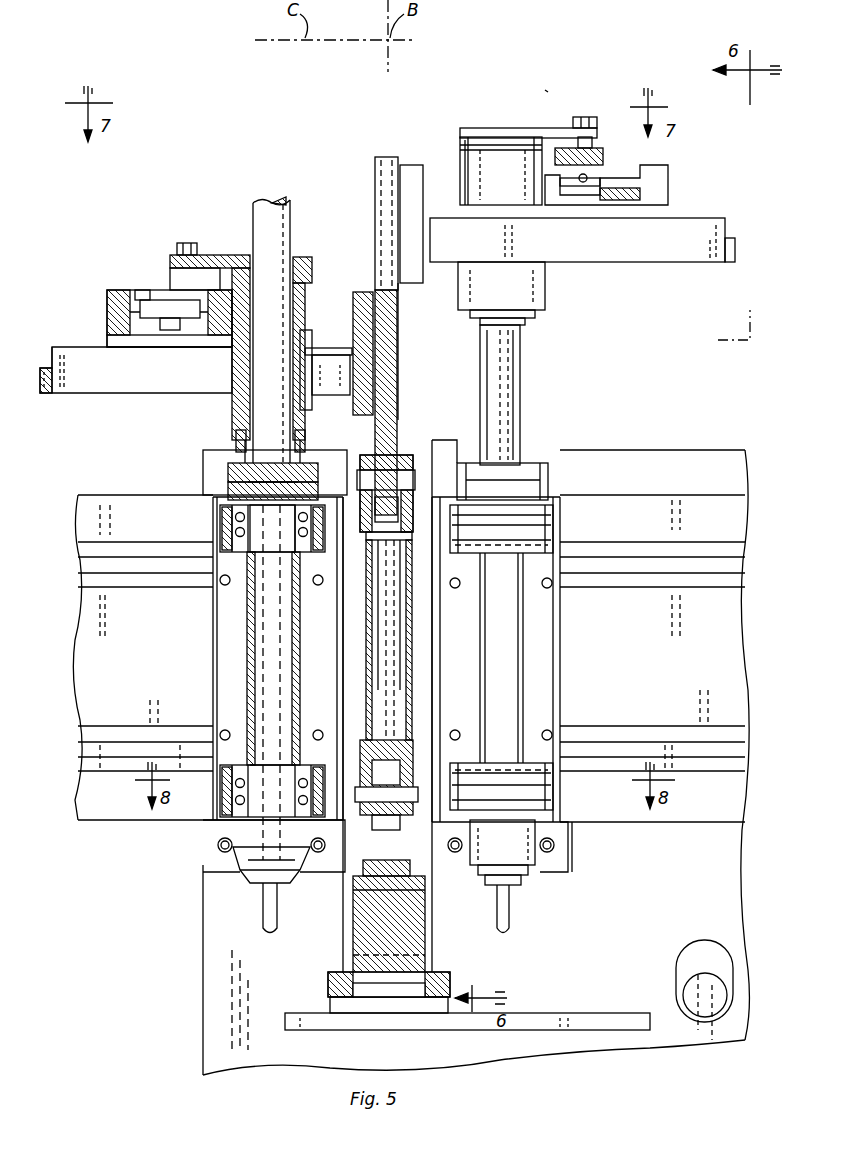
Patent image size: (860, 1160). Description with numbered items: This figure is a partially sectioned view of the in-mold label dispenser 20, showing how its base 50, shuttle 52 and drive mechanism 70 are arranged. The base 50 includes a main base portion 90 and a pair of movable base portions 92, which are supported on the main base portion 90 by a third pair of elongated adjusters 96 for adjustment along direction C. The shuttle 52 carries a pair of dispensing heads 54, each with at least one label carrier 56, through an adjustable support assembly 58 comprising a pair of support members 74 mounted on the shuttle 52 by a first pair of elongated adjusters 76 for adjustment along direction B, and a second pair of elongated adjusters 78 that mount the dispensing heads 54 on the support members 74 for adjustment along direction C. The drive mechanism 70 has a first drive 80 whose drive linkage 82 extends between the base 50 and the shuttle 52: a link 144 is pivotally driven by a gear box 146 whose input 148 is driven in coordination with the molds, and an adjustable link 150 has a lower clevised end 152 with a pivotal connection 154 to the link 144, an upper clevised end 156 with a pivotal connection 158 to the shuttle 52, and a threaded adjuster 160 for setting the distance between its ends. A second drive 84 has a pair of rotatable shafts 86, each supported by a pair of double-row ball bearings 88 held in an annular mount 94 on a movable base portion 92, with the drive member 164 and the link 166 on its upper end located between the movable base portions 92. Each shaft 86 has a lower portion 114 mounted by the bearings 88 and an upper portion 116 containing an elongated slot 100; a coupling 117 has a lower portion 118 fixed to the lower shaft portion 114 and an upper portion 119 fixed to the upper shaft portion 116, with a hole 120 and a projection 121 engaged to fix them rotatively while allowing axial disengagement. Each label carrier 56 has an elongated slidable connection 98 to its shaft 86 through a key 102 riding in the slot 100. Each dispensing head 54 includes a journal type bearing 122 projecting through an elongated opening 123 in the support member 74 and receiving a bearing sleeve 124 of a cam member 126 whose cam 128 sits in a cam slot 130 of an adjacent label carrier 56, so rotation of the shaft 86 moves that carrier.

The in-mold label dispenser 20 is at (548, 92).
The base 50 is at (197, 965).
The shuttle 52 is at (386, 162).
The dispensing heads 54 is at (140, 298).
The label carrier 56 is at (142, 290).
The adjustable support assembly 58 is at (148, 627).
The drive mechanism 70 is at (441, 893).
The support members 74 is at (302, 330).
The first pair of elongated adjusters 76 is at (365, 358).
The second pair of elongated adjusters 78 is at (103, 345).
The first drive 80 is at (434, 690).
The drive linkage 82 is at (412, 661).
The second drive 84 is at (507, 966).
The rotatable shafts 86 is at (265, 415).
The bearings 88 is at (222, 515).
The main base portion 90 is at (612, 822).
The movable base portions 92 is at (213, 650).
The annular mount 94 is at (222, 535).
The third pair of elongated adjusters 96 is at (163, 576).
The elongated slidable connection 98 is at (266, 353).
The elongated slot 100 is at (292, 206).
The key 102 is at (320, 378).
The lower shaft portion 114 is at (258, 618).
The upper shaft portion 116 is at (262, 398).
The coupling 117 is at (226, 468).
The lower coupling portion 118 is at (318, 482).
The upper coupling portion 119 is at (298, 462).
The hole 120 is at (274, 478).
The projection 121 is at (272, 528).
The journal type bearing 122 is at (232, 362).
The elongated opening 123 is at (72, 385).
The bearing sleeve 124 is at (230, 337).
The cam member 126 is at (228, 256).
The cam 128 is at (178, 288).
The cam slot 130 is at (205, 268).
The link 144 is at (502, 876).
The gear box 146 is at (645, 1035).
The input 148 is at (705, 1022).
The adjustable link 150 is at (412, 642).
The lower clevised end 152 is at (413, 728).
The pivotal connection 154 is at (388, 815).
The upper clevised end 156 is at (432, 470).
The pivotal connection 158 is at (398, 455).
The threaded adjuster 160 is at (440, 580).
The drive member 164 is at (420, 935).
The link 166 is at (363, 876).